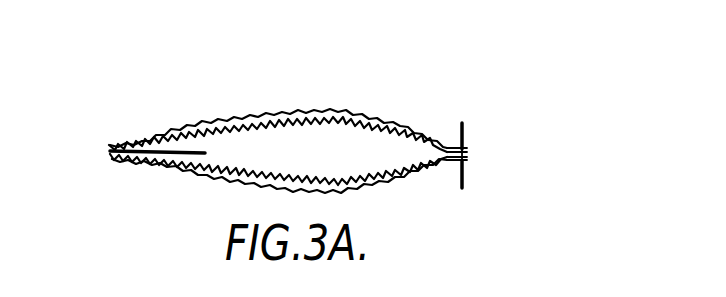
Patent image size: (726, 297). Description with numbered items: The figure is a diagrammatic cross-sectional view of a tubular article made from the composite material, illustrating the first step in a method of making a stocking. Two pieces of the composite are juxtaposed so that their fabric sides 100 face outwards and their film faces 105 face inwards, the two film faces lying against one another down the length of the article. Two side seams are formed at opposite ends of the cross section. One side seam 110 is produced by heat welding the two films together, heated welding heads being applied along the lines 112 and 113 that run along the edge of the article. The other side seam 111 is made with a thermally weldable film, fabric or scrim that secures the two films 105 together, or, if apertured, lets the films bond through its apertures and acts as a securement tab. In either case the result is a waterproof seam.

The fabric sides 100 is at (334, 112).
The film faces 105 is at (260, 126).
The side seam 110 is at (481, 151).
The side seam 111 is at (123, 118).
The line 112 is at (462, 123).
The line 113 is at (462, 187).